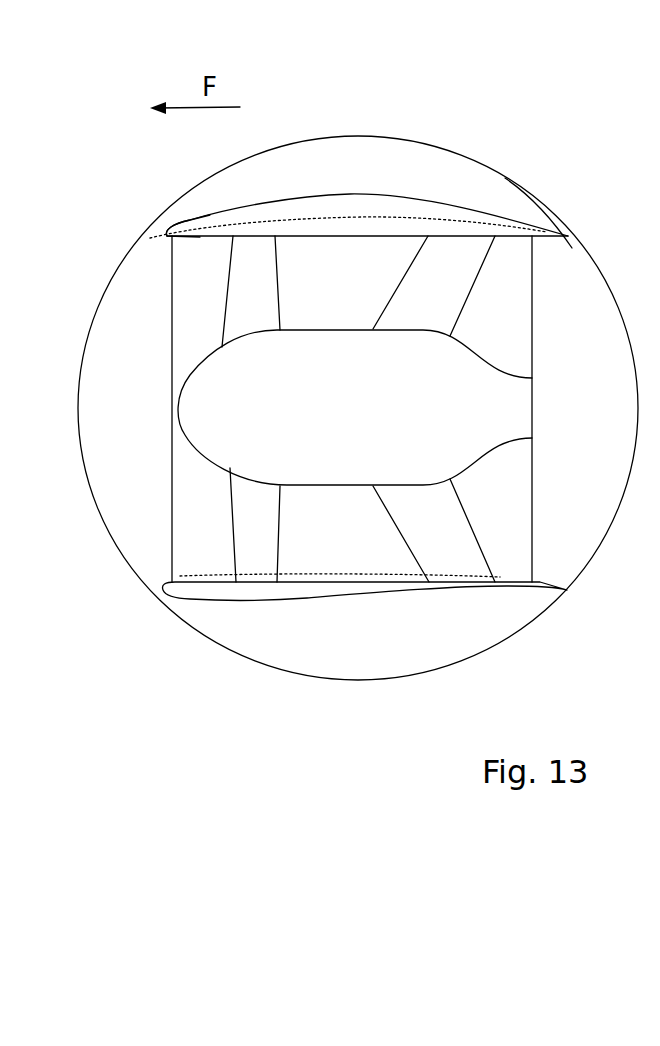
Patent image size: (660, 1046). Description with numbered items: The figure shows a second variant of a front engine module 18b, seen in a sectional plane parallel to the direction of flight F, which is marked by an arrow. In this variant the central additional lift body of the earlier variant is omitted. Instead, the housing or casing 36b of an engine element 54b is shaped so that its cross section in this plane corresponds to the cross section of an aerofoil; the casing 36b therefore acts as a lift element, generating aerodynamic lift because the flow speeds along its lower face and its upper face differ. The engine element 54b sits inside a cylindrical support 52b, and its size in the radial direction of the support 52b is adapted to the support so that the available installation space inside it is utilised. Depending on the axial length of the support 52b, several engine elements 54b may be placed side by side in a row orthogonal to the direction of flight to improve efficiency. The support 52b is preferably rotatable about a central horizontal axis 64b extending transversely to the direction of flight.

The engine module 18b is at (465, 153).
The cylindrical support 52b is at (543, 206).
The casing 36b is at (278, 206).
The engine element 54b is at (183, 223).
The central horizontal axis 64b is at (355, 412).